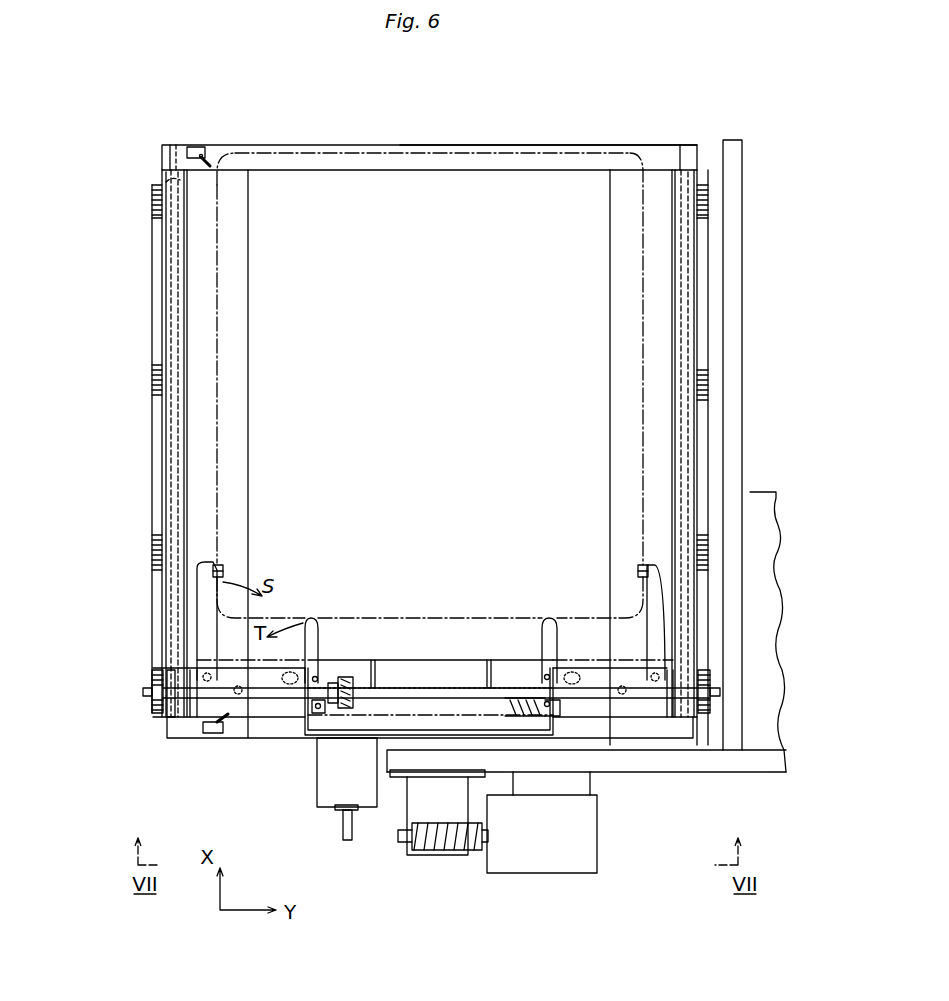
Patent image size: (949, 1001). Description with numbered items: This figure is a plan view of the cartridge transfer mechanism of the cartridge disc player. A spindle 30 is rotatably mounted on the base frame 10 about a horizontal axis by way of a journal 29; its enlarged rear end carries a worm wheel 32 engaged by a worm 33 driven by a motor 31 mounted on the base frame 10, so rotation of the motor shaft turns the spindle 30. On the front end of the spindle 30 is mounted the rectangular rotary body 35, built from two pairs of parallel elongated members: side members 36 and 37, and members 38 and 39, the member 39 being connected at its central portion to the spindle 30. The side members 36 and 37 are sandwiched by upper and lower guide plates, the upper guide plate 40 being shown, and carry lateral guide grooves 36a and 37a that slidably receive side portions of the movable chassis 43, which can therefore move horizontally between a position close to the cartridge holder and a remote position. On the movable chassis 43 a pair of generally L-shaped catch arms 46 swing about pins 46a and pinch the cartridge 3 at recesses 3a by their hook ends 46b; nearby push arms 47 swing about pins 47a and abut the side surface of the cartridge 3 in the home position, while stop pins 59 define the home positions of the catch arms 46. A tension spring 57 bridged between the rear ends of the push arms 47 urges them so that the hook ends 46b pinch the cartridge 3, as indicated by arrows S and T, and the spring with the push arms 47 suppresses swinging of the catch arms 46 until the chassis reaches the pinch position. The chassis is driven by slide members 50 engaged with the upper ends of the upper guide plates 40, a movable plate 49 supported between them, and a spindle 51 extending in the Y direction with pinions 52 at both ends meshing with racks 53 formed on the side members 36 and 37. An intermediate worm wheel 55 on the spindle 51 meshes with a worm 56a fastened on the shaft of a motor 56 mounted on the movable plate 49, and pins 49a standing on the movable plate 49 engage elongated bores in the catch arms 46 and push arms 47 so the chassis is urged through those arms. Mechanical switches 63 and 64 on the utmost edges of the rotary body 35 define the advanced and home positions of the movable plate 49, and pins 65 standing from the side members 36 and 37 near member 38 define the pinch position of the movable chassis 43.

The cartridge 3 is at (505, 200).
The recess 3a is at (215, 579).
The base frame 10 is at (733, 758).
The journal 29 is at (440, 775).
The spindle 30 is at (425, 747).
The motor 31 is at (595, 855).
The worm wheel 32 is at (403, 847).
The worm 33 is at (455, 848).
The rectangular rotary body 35 is at (144, 369).
The side member 36 is at (690, 160).
The guide groove 36a is at (685, 360).
The side member 37 is at (162, 156).
The guide groove 37a is at (177, 427).
The member 38 is at (655, 152).
The member 39 is at (170, 720).
The upper guide plate 40 is at (195, 268).
The movable chassis 43 is at (447, 672).
The catch arm 46 is at (444, 650).
The pin 46a is at (207, 700).
The hook end 46b is at (213, 567).
The push arm 47 is at (313, 640).
The pin 47a is at (320, 677).
The movable plate 49 is at (565, 720).
The pin 49a is at (295, 682).
The slide member 50 is at (190, 700).
The spindle 51 is at (397, 688).
The pinion 52 is at (152, 702).
The rack 53 is at (155, 243).
The worm wheel 55 is at (345, 707).
The motor 56 is at (347, 722).
The worm 56a is at (350, 692).
The tension spring 57 is at (520, 700).
The stop pin 59 is at (431, 626).
The mechanical switch 63 is at (195, 147).
The mechanical switch 64 is at (213, 734).
The pin 65 is at (172, 180).